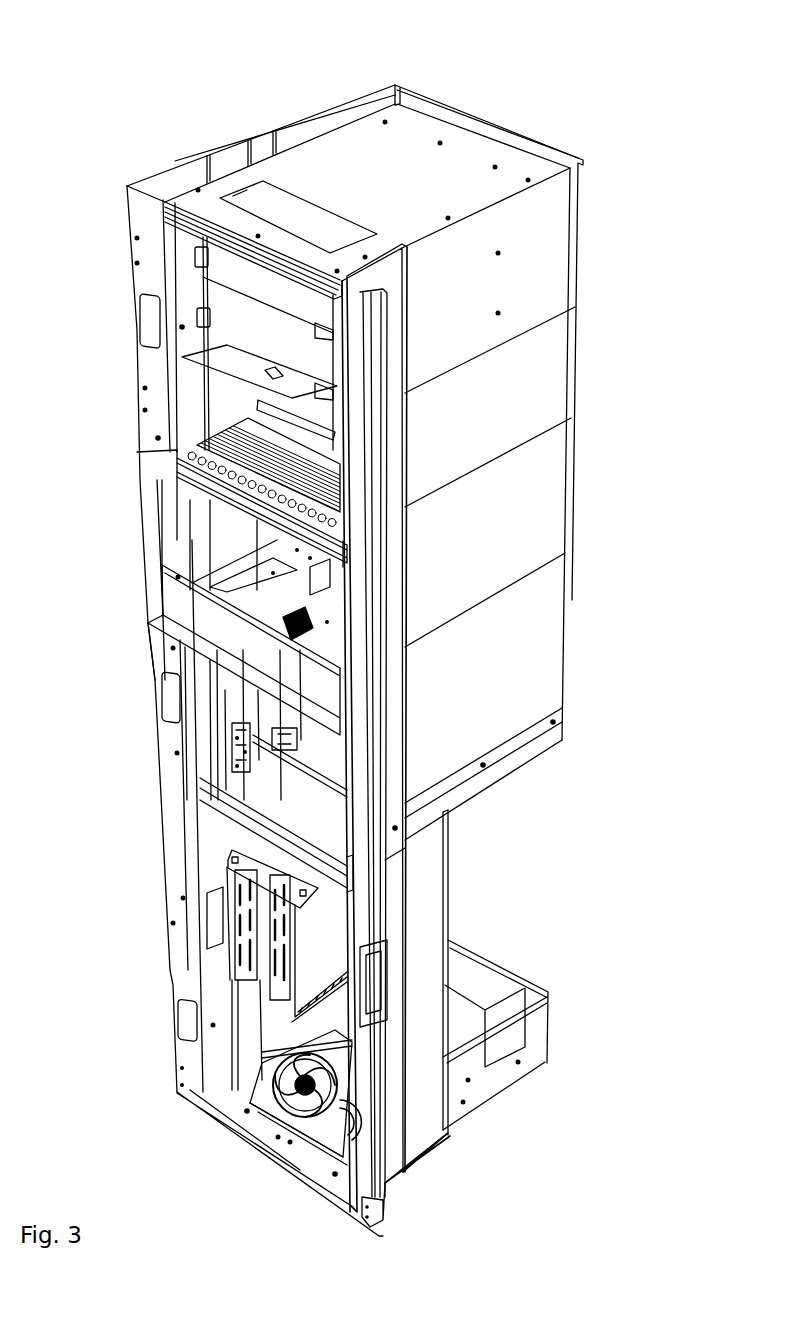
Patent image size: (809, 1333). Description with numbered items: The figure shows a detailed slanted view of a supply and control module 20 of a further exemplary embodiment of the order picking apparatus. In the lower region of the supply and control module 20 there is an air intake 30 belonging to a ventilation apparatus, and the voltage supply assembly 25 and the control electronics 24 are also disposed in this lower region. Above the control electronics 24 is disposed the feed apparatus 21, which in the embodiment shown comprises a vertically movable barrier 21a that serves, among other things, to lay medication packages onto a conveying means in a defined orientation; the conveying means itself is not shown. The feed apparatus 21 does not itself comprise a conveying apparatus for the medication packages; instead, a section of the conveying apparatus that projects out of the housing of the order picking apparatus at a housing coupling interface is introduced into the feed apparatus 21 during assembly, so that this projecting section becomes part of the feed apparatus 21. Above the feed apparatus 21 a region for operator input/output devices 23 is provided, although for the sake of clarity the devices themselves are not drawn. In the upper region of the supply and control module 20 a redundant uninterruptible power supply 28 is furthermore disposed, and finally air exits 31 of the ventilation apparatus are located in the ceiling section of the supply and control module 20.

The supply and control module 20 is at (160, 108).
The feed apparatus 21 is at (500, 664).
The vertically movable barrier 21a is at (267, 752).
The region for operator input/output devices 23 is at (480, 522).
The control electronics 24 is at (250, 925).
The voltage supply assembly 25 is at (482, 978).
The redundant uninterruptible power supply 28 is at (285, 347).
The air intake 30 is at (300, 1100).
The air exits 31 is at (303, 208).